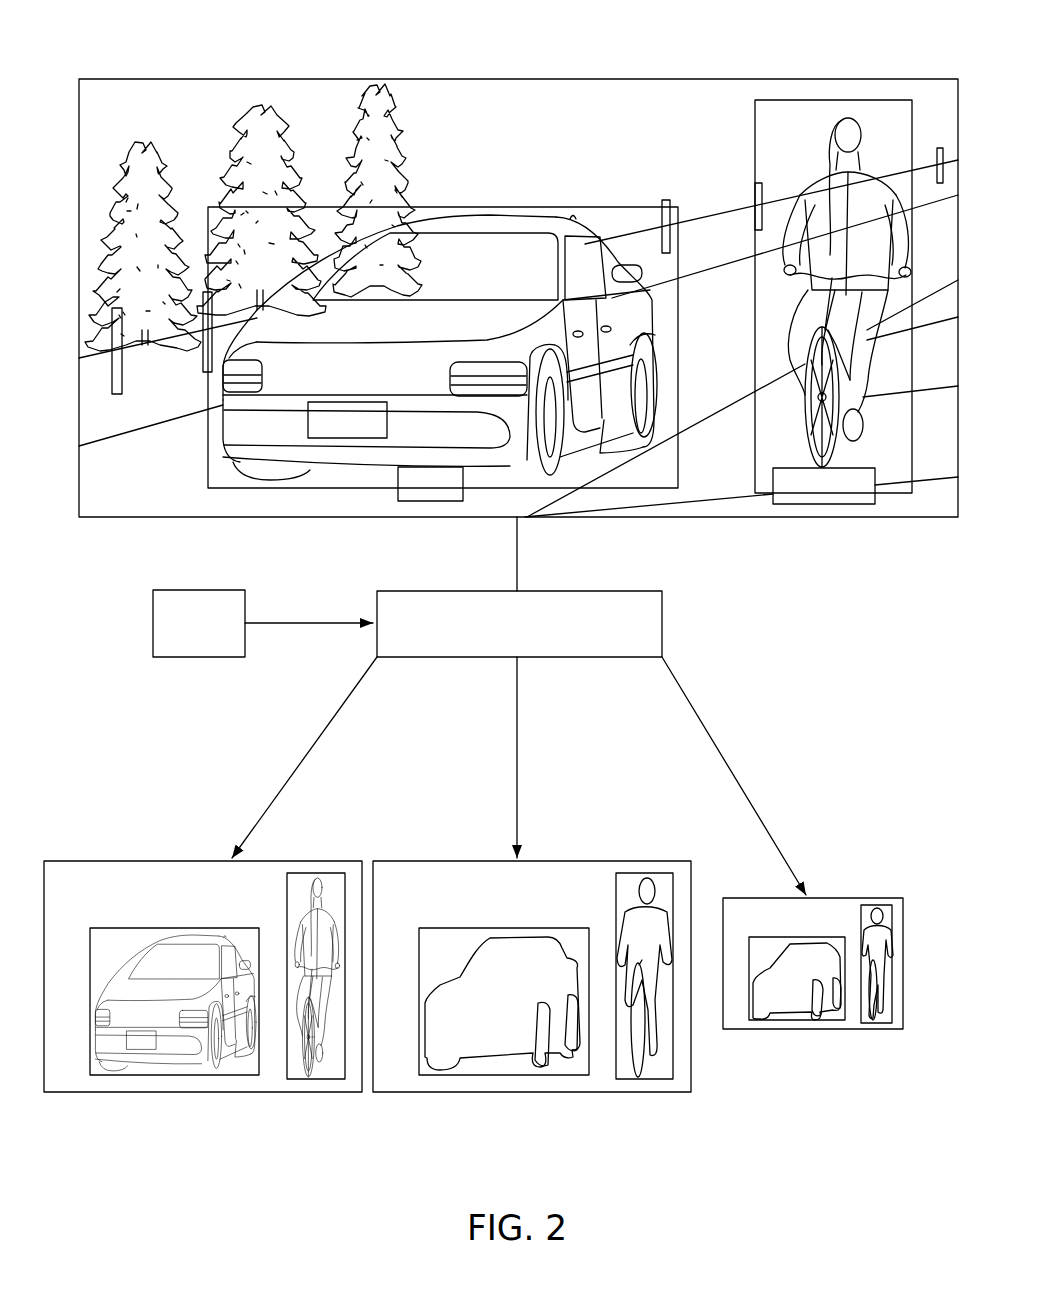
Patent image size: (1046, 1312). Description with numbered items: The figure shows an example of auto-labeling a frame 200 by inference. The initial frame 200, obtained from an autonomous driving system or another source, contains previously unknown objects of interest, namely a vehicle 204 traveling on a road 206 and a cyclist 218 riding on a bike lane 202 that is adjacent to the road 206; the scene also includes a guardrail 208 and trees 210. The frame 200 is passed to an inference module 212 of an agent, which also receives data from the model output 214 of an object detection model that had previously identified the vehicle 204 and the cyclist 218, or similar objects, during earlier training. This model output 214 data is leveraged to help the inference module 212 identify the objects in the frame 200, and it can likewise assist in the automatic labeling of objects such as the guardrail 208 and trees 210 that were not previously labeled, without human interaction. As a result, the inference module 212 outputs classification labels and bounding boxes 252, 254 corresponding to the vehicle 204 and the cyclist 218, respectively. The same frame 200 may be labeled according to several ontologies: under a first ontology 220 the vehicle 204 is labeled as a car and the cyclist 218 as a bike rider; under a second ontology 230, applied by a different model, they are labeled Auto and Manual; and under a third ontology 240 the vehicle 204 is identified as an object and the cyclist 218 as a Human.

The frame 200 is at (677, 79).
The bike lane 202 is at (738, 495).
The vehicle 204 is at (489, 210).
The road 206 is at (712, 338).
The guardrail 208 is at (203, 352).
The trees 210 is at (418, 142).
The inference module 212 is at (662, 612).
The model output 214 is at (245, 611).
The cyclist 218 is at (803, 180).
The first ontology 220 is at (127, 928).
The second ontology 230 is at (455, 928).
The third ontology 240 is at (712, 895).
The bounding box 252 is at (552, 207).
The bounding box 254 is at (754, 122).